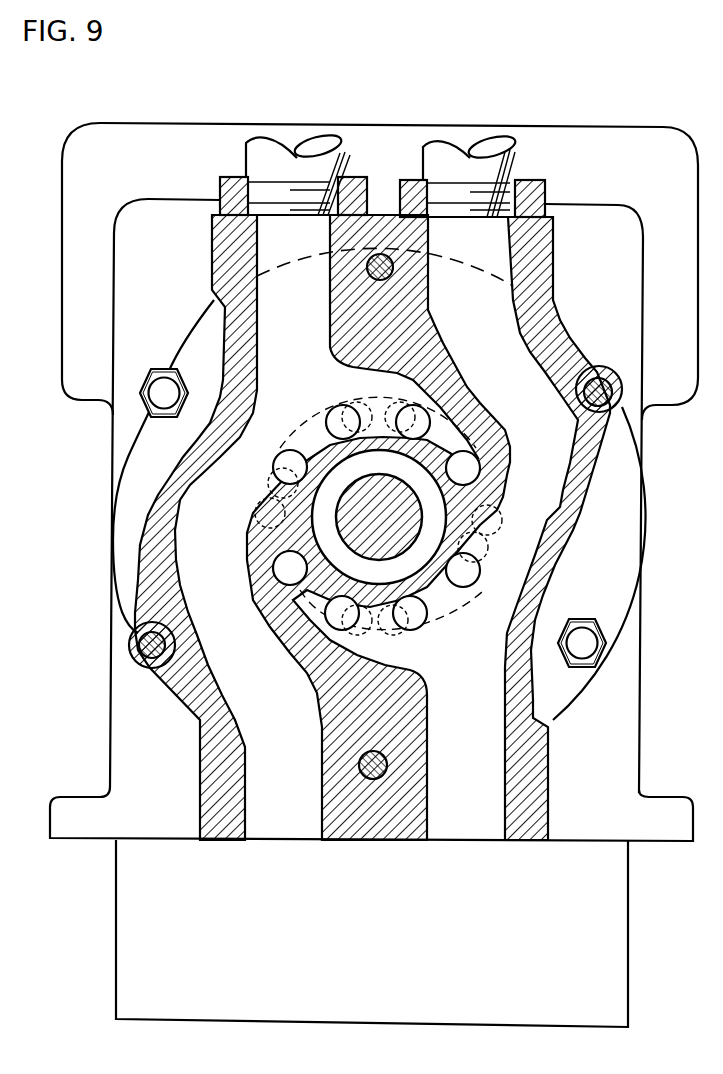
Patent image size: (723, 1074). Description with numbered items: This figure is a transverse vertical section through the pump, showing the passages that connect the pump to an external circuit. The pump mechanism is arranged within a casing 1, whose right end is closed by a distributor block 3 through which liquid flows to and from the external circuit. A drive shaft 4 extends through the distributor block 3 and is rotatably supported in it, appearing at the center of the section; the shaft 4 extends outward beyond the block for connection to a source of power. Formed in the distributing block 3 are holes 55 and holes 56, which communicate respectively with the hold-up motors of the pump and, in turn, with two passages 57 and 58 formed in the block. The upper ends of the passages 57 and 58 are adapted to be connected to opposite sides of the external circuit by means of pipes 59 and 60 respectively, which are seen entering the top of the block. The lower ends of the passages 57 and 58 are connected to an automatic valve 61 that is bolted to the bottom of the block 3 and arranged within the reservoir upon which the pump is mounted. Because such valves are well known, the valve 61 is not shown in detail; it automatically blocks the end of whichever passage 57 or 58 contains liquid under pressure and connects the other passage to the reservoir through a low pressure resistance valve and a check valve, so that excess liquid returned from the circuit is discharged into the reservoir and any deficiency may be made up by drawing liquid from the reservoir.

The casing 1 is at (638, 142).
The distributor block 3 is at (222, 248).
The drive shaft 4 is at (389, 526).
The holes 55 is at (407, 412).
The holes 56 is at (283, 565).
The passage 57 is at (300, 313).
The passage 58 is at (492, 315).
The pipe 59 is at (245, 156).
The pipe 60 is at (518, 160).
The automatic valve 61 is at (230, 1000).